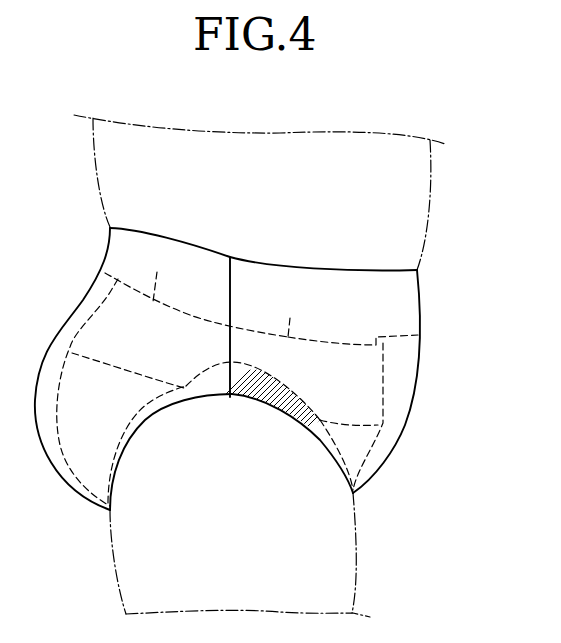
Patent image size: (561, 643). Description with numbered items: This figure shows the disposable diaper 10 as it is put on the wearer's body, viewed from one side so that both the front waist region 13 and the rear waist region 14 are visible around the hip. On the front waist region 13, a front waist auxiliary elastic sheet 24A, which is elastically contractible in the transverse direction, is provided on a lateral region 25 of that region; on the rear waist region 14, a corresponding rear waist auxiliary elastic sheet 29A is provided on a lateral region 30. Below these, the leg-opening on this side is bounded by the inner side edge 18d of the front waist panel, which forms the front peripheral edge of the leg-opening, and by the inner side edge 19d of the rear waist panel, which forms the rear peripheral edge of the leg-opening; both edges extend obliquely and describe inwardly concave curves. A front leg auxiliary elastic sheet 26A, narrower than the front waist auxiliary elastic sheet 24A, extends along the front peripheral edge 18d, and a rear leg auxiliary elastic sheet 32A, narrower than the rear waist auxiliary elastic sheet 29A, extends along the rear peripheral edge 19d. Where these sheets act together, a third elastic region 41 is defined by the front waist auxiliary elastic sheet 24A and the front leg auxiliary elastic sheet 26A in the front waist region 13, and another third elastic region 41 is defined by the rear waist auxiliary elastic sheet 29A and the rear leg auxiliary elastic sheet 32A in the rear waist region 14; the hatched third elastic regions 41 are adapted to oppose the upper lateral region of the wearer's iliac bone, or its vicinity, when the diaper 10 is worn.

The diaper 10 is at (97, 249).
The front waist region 13 is at (395, 295).
The rear waist region 14 is at (117, 261).
The lateral region of the front waist region 25 is at (335, 283).
The lateral region of the rear waist region 30 is at (202, 262).
The rear waist auxiliary elastic sheet 29A is at (196, 291).
The front waist auxiliary elastic sheet 24A is at (291, 318).
The third elastic region 41 is at (207, 378).
The rear leg auxiliary elastic sheet 32A is at (145, 423).
The front leg auxiliary elastic sheet 26A is at (307, 425).
The inner side edge of the rear waist panel 19d is at (115, 477).
The inner side edge of the front waist panel 18d is at (335, 462).